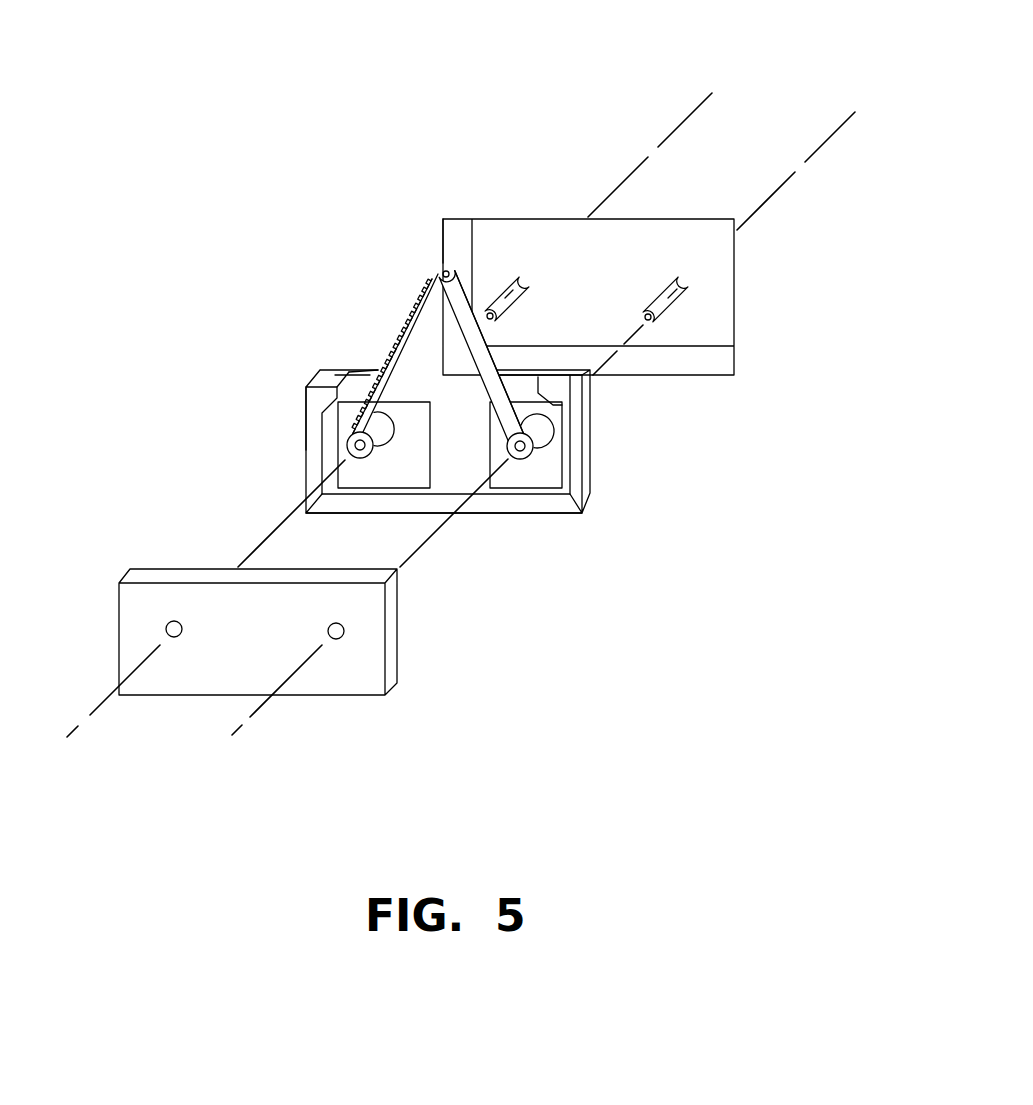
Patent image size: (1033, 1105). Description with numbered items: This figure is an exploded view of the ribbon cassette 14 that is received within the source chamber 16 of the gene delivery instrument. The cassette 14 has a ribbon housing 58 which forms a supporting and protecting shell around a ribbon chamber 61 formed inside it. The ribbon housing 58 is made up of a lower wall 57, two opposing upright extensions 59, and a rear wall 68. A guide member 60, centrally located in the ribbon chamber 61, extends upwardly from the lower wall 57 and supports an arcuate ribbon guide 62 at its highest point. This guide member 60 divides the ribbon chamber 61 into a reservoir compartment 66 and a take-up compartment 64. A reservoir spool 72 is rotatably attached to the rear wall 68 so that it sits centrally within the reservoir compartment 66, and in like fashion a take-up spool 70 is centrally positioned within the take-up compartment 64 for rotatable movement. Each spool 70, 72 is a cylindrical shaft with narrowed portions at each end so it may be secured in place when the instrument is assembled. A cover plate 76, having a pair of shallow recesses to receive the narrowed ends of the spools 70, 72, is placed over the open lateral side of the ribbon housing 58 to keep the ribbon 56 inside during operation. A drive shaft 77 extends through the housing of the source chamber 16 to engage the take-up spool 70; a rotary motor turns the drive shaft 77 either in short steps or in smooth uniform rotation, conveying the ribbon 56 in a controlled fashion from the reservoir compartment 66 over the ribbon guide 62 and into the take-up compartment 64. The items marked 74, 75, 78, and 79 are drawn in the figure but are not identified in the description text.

The cassette 14 is at (175, 461).
The source chamber 16 is at (445, 232).
The ribbon 56 is at (388, 327).
The lower wall 57 is at (356, 500).
The ribbon housing 58 is at (305, 427).
The upright extensions 59 is at (318, 400).
The guide member 60 is at (457, 488).
The ribbon chamber 61 is at (383, 467).
The arcuate ribbon guide 62 is at (430, 283).
The take-up compartment 64 is at (530, 403).
The reservoir compartment 66 is at (314, 396).
The rear wall 68 is at (350, 385).
The take-up spool 70 is at (527, 448).
The reservoir spool 72 is at (348, 449).
The roller axle 74 is at (540, 455).
The pin 75 is at (512, 283).
The cover plate 76 is at (375, 663).
The drive shaft 77 is at (688, 290).
The holes 78 is at (180, 638).
The plate edge 79 is at (460, 226).